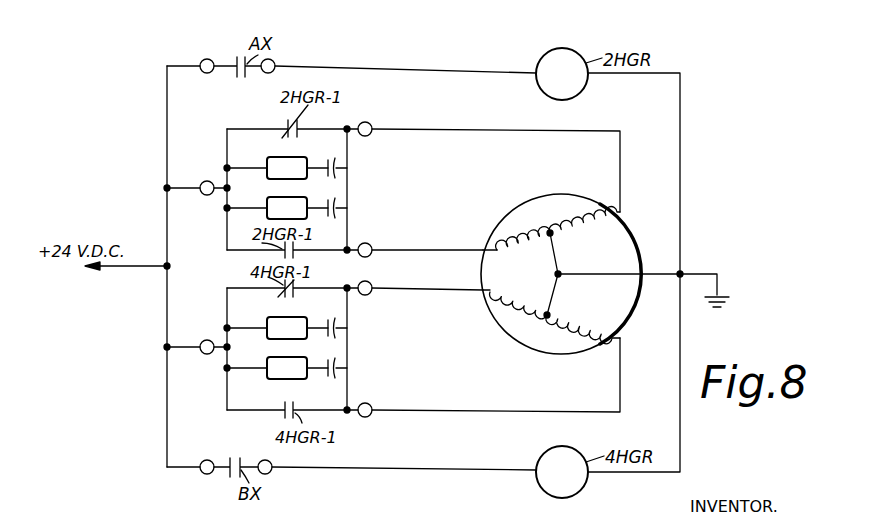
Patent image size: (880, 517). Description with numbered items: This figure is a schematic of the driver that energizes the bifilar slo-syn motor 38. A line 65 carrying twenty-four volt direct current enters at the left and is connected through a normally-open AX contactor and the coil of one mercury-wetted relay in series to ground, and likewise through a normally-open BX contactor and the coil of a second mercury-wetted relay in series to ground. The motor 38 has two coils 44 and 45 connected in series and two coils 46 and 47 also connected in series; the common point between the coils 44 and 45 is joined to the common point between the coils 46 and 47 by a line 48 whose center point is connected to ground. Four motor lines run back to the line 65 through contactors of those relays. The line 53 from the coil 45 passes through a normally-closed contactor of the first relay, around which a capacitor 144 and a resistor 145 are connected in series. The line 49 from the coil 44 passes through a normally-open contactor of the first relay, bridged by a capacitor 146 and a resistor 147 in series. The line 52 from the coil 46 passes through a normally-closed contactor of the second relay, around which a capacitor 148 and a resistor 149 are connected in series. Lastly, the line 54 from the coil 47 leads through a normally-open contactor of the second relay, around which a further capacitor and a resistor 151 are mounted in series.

The motor 38 is at (632, 230).
The coil 44 is at (515, 243).
The coil 45 is at (582, 218).
The coil 46 is at (521, 313).
The coil 47 is at (582, 335).
The line 48 is at (551, 251).
The line 49 is at (443, 249).
The line 52 is at (445, 291).
The line 53 is at (487, 130).
The line 54 is at (516, 411).
The line 65 is at (132, 269).
The capacitor 144 is at (338, 164).
The resistor 145 is at (305, 159).
The capacitor 146 is at (338, 214).
The resistor 147 is at (267, 203).
The capacitor 148 is at (338, 324).
The resistor 149 is at (306, 316).
The resistor 151 is at (267, 365).